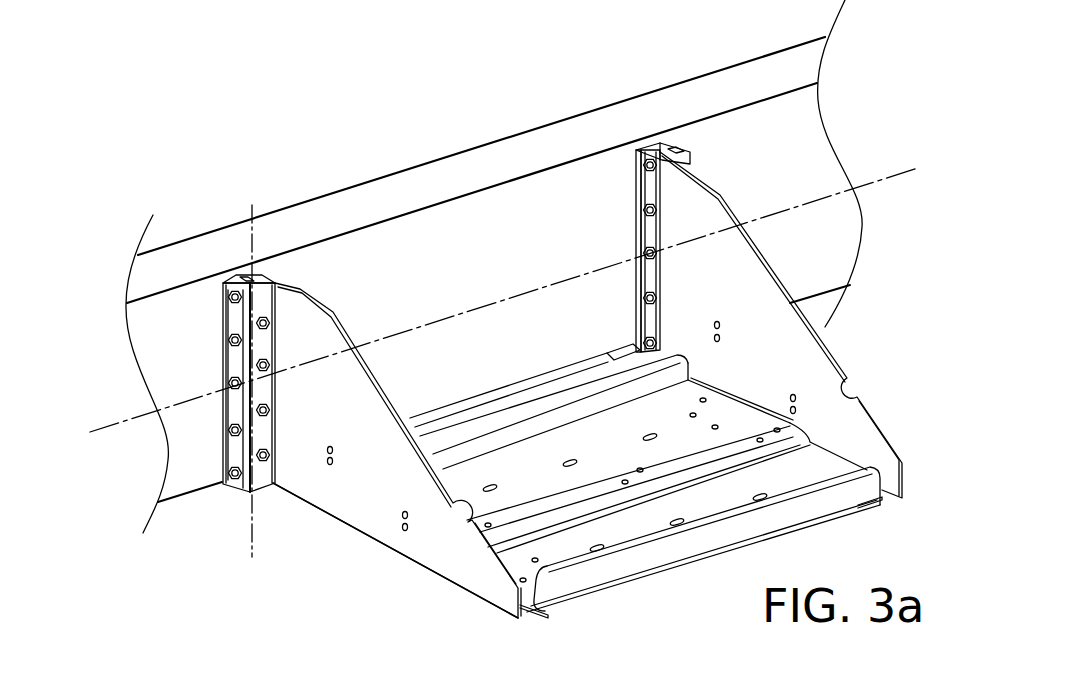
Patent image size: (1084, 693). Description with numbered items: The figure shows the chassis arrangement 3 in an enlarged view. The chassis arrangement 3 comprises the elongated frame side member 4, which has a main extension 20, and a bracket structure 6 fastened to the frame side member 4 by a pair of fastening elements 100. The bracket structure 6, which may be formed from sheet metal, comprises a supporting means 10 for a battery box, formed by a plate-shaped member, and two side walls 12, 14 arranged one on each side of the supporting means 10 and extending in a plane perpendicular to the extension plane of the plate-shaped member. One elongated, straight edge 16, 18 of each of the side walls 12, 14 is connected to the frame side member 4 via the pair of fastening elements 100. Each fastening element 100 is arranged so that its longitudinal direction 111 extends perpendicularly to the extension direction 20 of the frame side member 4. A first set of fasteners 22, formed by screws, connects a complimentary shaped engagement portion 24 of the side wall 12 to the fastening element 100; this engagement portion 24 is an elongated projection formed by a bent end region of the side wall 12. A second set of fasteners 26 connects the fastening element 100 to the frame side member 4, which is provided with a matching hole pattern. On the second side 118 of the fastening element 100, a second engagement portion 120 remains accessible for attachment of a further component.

The chassis arrangement 3 is at (308, 96).
The frame side member 4 is at (455, 265).
The bracket structure 6 is at (350, 548).
The supporting means 10 is at (625, 520).
The side wall 12 is at (425, 540).
The side wall 14 is at (838, 433).
The elongated straight edge 16 is at (276, 327).
The elongated straight edge 18 is at (612, 197).
The main extension 20 is at (118, 423).
The first set of fasteners 22 is at (230, 300).
The complimentary shaped engagement portion 24 is at (272, 262).
The second set of fasteners 26 is at (304, 276).
The fastening element 100 is at (222, 500).
The longitudinal direction 111 is at (245, 550).
The second side 118 is at (200, 348).
The second engagement portion 120 is at (200, 380).